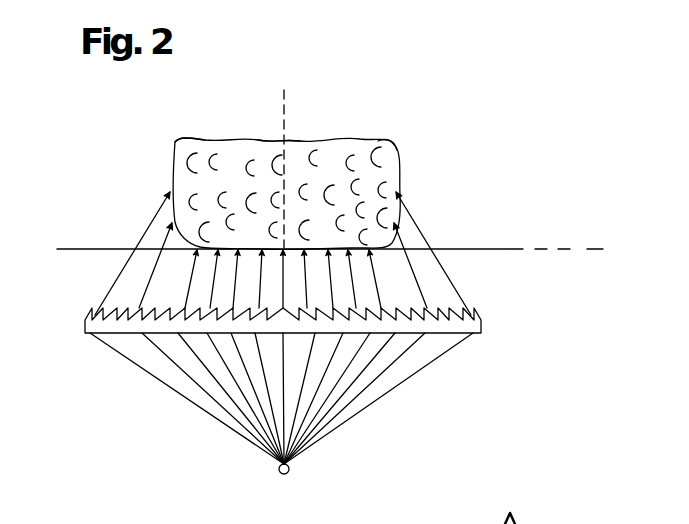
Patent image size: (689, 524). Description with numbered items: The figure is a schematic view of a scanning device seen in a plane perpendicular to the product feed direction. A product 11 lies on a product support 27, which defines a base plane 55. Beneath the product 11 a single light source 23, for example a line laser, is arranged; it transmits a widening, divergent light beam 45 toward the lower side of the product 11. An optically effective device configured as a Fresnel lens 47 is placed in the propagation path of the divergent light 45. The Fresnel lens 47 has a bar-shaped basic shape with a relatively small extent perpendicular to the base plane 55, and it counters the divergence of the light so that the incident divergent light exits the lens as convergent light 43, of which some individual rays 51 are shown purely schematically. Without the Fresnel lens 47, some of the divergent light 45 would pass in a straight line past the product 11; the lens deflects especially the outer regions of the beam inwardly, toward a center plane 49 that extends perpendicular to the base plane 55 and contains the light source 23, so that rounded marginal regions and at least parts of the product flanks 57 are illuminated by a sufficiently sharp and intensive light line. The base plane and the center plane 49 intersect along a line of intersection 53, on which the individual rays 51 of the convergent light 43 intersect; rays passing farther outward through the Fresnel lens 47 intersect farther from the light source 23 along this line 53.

The product 11 is at (368, 146).
The light source 23 is at (278, 473).
The product support 27 is at (460, 248).
The convergent light 43 is at (140, 223).
The divergent light beam 45 is at (163, 390).
The Fresnel lens 47 is at (483, 331).
The center plane 49 is at (286, 90).
The individual rays 51 is at (122, 272).
The line of intersection 53 is at (282, 139).
The base plane 55 is at (571, 249).
The product flanks 57 is at (170, 163).